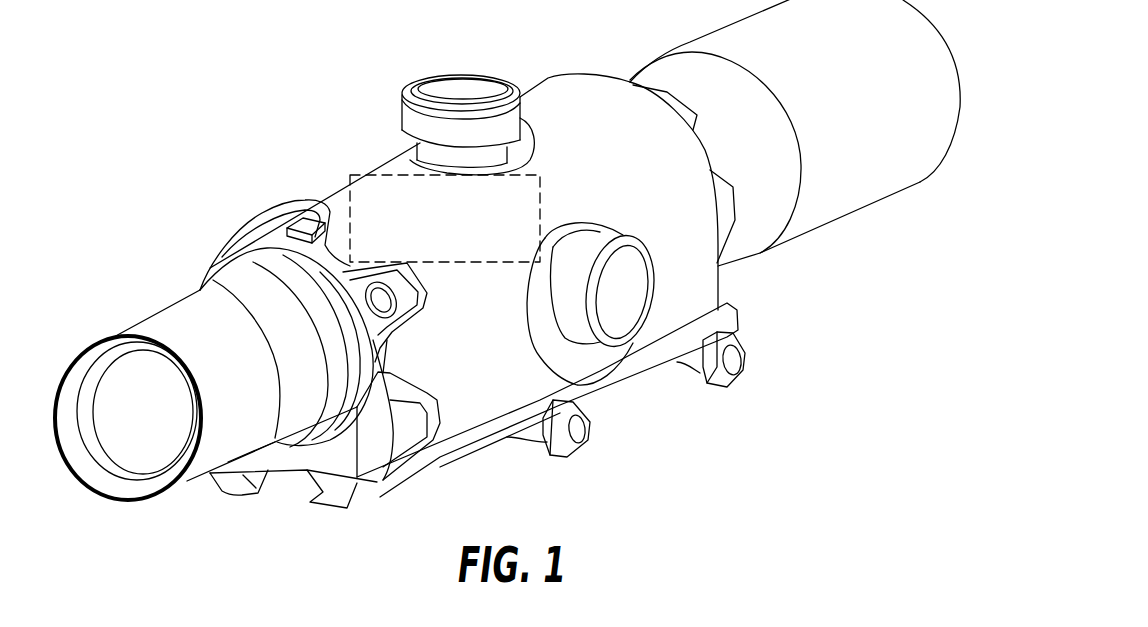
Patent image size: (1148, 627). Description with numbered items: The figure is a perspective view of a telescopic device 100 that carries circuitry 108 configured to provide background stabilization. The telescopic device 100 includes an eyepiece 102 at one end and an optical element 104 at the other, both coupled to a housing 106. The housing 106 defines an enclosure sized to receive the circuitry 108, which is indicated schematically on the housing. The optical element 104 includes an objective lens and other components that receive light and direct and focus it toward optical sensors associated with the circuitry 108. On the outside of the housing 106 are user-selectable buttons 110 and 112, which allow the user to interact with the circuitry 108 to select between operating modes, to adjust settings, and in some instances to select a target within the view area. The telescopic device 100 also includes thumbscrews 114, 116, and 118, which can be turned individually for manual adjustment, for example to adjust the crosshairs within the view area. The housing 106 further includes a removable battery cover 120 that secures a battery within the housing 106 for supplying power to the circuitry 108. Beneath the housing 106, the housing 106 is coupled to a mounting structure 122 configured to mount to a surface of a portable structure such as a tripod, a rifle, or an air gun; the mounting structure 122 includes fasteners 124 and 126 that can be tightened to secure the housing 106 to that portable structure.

The telescopic device 100 is at (192, 64).
The eyepiece 102 is at (130, 318).
The optical element 104 is at (725, 48).
The housing 106 is at (380, 166).
The circuitry 108 is at (540, 205).
The user-selectable button 110 is at (377, 293).
The user-selectable button 112 is at (298, 232).
The thumbscrew 114 is at (306, 190).
The thumbscrew 116 is at (464, 88).
The thumbscrew 118 is at (620, 310).
The removable battery cover 120 is at (376, 442).
The mounting structure 122 is at (237, 494).
The fastener 124 is at (573, 454).
The fastener 126 is at (735, 368).